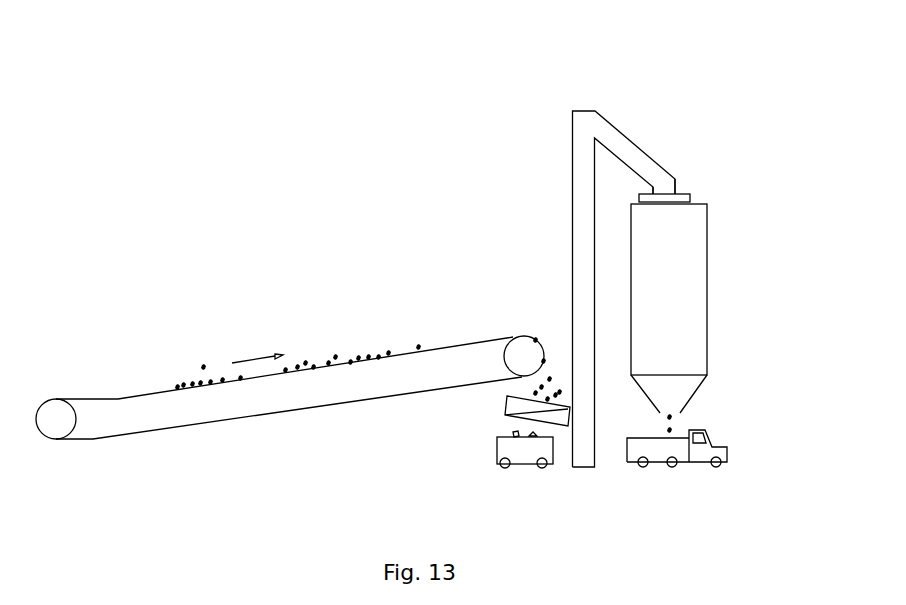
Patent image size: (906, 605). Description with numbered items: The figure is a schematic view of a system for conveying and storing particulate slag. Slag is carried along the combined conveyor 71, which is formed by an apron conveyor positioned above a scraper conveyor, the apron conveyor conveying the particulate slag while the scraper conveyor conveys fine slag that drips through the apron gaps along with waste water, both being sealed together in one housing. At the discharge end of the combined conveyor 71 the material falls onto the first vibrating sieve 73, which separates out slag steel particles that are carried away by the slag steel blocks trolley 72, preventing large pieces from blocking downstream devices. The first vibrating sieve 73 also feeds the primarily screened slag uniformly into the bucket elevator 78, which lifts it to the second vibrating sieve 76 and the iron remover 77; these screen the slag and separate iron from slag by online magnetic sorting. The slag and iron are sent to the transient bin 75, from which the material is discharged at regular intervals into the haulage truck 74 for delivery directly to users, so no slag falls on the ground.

The combined conveyor 71 is at (165, 408).
The slag steel blocks trolley 72 is at (523, 448).
The first vibrating sieve 73 is at (532, 408).
The haulage truck 74 is at (698, 442).
The transient bin 75 is at (680, 277).
The second vibrating sieve 76 is at (667, 192).
The iron remover 77 is at (666, 197).
The bucket elevator 78 is at (585, 138).